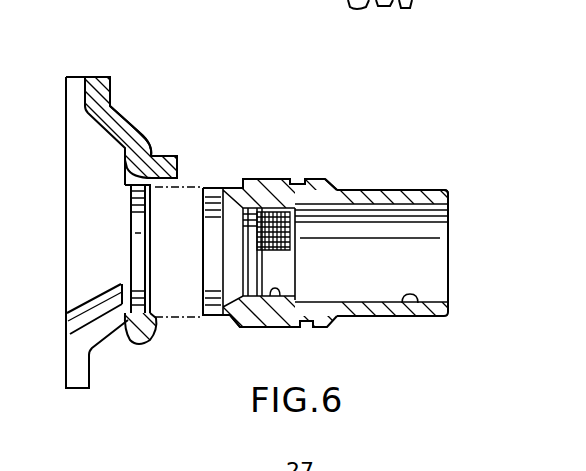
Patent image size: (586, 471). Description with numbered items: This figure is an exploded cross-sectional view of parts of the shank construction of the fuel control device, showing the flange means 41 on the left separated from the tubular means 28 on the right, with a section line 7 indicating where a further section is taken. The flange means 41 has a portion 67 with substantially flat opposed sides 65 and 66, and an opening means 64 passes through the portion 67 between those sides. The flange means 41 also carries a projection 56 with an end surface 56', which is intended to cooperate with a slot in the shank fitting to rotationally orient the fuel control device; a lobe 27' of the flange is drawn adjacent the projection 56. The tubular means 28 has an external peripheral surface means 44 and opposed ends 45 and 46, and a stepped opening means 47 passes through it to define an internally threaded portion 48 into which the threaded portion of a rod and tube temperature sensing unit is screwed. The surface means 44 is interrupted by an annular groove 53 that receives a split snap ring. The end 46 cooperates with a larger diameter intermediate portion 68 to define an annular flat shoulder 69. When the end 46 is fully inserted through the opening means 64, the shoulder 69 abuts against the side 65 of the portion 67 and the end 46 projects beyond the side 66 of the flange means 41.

The section line 7- 7 is at (180, 106).
The flange means 41 is at (118, 117).
The bead lobe 27' is at (167, 124).
The projection 56 is at (184, 144).
The end surface 56' is at (204, 155).
The side 66 is at (125, 178).
The opening means 64 is at (150, 304).
The side 65 is at (156, 340).
The portion 67 is at (127, 344).
The end 46 is at (230, 190).
The intermediate portion 68 is at (272, 179).
The annular groove 53 is at (292, 182).
The external peripheral surface means 44 is at (343, 191).
The tubular means 28 is at (383, 191).
The end 45 is at (445, 191).
The stepped opening means 47 is at (405, 306).
The annular flat shoulder 69 is at (235, 328).
The internally threaded portion 48 is at (277, 328).